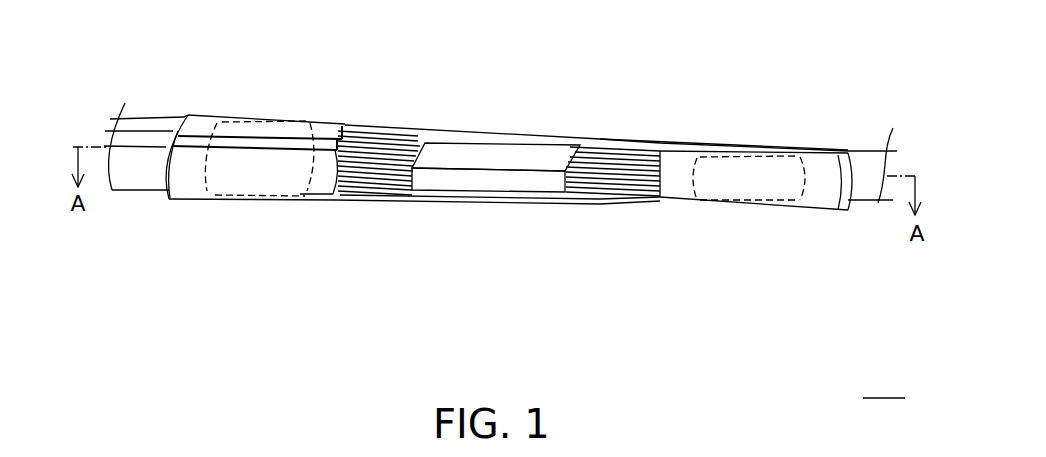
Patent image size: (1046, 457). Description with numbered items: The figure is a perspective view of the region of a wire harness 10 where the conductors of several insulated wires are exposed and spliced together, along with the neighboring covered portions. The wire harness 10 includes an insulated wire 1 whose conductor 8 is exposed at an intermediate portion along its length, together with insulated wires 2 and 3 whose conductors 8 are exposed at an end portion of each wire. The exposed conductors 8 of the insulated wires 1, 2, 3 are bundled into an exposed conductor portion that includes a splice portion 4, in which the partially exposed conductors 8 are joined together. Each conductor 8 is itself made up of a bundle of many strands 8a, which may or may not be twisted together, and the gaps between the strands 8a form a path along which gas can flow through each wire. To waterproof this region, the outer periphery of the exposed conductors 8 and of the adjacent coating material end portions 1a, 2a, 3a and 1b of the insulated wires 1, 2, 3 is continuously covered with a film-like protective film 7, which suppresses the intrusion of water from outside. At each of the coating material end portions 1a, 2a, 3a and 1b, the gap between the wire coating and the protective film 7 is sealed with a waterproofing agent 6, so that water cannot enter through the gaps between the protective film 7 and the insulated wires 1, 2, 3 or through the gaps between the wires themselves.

The insulated wire 1 is at (151, 118).
The coating material end portion 1a is at (334, 126).
The coating material end portion 1b is at (676, 160).
The insulated wire 2 is at (138, 139).
The coating material end portion 2a is at (326, 126).
The insulated wire 3 is at (147, 180).
The coating material end portion 3a is at (329, 193).
The splice portion 4 is at (472, 183).
The waterproofing agent 6 is at (192, 201).
The protective film 7 is at (677, 199).
The conductor 8 is at (370, 150).
The strand 8a is at (352, 170).
The wire harness 10 is at (884, 382).